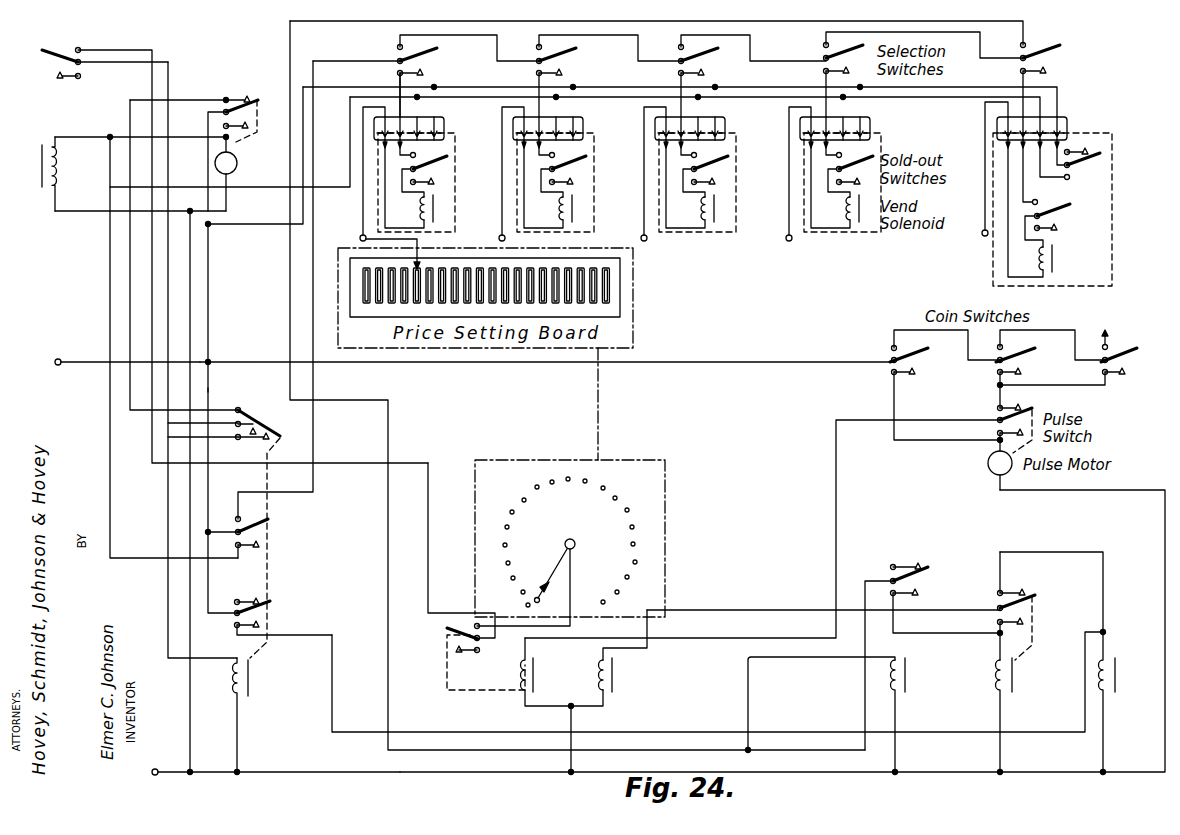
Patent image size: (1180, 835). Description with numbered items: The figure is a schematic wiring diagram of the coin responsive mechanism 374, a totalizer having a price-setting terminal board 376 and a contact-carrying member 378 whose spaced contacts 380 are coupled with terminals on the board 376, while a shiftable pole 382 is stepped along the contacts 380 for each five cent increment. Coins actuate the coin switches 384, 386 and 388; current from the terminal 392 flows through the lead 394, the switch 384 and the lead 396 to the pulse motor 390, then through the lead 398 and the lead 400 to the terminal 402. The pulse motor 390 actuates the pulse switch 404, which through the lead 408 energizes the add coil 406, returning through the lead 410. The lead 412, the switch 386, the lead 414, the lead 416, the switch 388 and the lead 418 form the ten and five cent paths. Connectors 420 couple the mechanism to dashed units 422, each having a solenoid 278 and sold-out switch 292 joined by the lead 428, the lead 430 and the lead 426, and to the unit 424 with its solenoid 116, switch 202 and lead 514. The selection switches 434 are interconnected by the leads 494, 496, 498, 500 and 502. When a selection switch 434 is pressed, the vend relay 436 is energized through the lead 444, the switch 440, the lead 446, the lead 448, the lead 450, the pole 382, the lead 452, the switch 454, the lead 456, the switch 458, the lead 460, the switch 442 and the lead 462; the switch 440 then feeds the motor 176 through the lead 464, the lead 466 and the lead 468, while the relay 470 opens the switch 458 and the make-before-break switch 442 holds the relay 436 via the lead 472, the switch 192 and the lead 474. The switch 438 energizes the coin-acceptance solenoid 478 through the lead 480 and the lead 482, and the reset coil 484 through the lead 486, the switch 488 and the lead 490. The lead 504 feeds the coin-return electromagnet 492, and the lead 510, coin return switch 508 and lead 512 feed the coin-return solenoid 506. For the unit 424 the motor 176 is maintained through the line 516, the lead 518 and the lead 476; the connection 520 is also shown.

The switch 458 is at (84, 52).
The lead 466 is at (80, 137).
The relay 470 is at (44, 187).
The switch 192 is at (226, 98).
The lead 476 is at (238, 148).
The motor 176 is at (238, 166).
The line 516 is at (262, 224).
The lead 428 is at (400, 170).
The lead 474 is at (130, 305).
The lead 472 is at (209, 302).
The lead 460 is at (170, 258).
The lead 468 is at (192, 282).
The lead 462 is at (168, 500).
The lead 464 is at (145, 557).
The terminal 392 is at (60, 359).
The lead 394 is at (438, 364).
The lead 444 is at (210, 390).
The switch 442 is at (243, 409).
The lead 446 is at (315, 440).
The switch 440 is at (234, 529).
The switch 438 is at (236, 608).
The vend relay 436 is at (245, 698).
The terminal 402 is at (158, 768).
The lead 400 is at (853, 773).
The lead 398 is at (1165, 545).
The lead 480 is at (346, 732).
The lead 410 is at (575, 748).
The lead 456 is at (429, 545).
The lead 452 is at (508, 630).
The switch 454 is at (468, 641).
The add solenoid coil 406 is at (515, 693).
The reset coil 484 is at (620, 683).
The lead 408 is at (836, 497).
The lead 490 is at (730, 610).
The lead 504 is at (750, 692).
The coin-return electromagnet 492 is at (910, 684).
The lead 510 is at (865, 712).
The coin return switch 508 is at (891, 581).
The lead 512 is at (925, 634).
The switch 488 is at (998, 608).
The coin-return solenoid 506 is at (1020, 684).
The lead 486 is at (1058, 552).
The coin-acceptance solenoid 478 is at (1112, 655).
The lead 482 is at (1108, 740).
The coin switch 384 is at (890, 360).
The lead 412 is at (910, 330).
The coin switch 386 is at (992, 360).
The lead 416 is at (1075, 330).
The coin switch 388 is at (1115, 345).
The lead 418 is at (1103, 386).
The lead 396 is at (894, 399).
The lead 414 is at (1000, 398).
The pulse switch 404 is at (997, 426).
The pulse motor 390 is at (988, 470).
The contact-carrying member 378 is at (620, 460).
The contacts 380 is at (527, 504).
The shiftable pole 382 is at (565, 573).
The coin responsive mechanism 374 is at (633, 346).
The price-setting terminal board 376 is at (633, 297).
The selection switch 434 is at (397, 59).
The lead 448 is at (398, 100).
The lead 494 is at (469, 45).
The lead 496 is at (610, 48).
The lead 498 is at (753, 48).
The lead 500 is at (975, 32).
The lead 502 is at (1025, 21).
The bus conductor 520 is at (924, 99).
The connectors 420 is at (444, 121).
The lead 430 is at (404, 147).
The sold-out switch 292 is at (438, 164).
The solenoid 278 is at (436, 212).
The lead 426 is at (383, 205).
The lead 450 is at (363, 197).
The unit 422 is at (456, 186).
The lead 518 is at (1060, 143).
The lead 514 is at (982, 233).
The switch 202 is at (1043, 218).
The solenoid 116 is at (1055, 260).
The unit 424 is at (1112, 225).